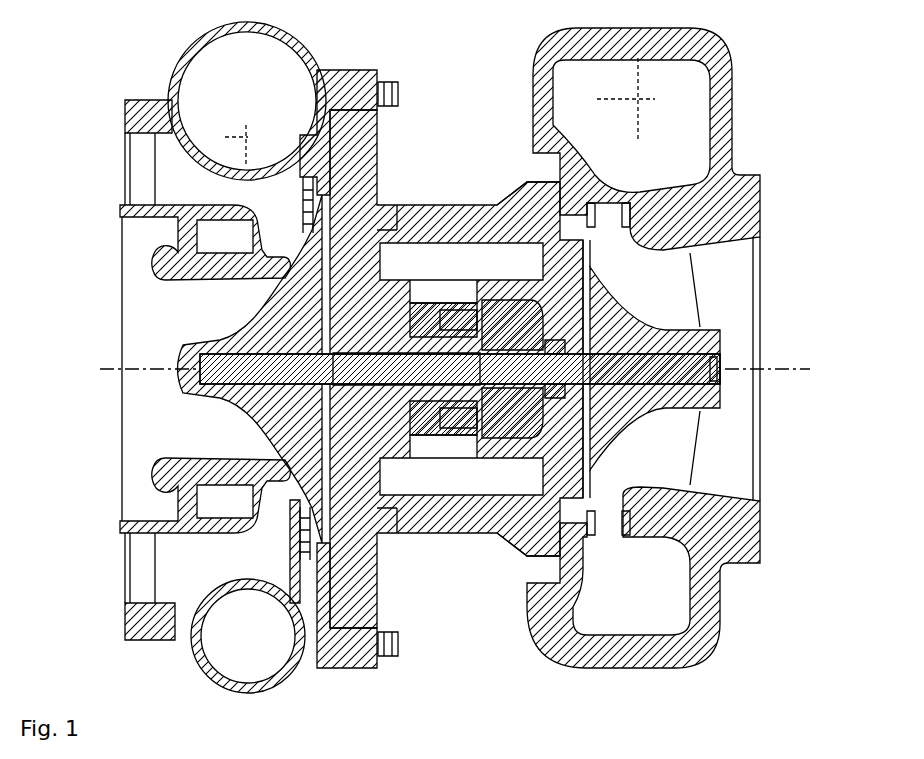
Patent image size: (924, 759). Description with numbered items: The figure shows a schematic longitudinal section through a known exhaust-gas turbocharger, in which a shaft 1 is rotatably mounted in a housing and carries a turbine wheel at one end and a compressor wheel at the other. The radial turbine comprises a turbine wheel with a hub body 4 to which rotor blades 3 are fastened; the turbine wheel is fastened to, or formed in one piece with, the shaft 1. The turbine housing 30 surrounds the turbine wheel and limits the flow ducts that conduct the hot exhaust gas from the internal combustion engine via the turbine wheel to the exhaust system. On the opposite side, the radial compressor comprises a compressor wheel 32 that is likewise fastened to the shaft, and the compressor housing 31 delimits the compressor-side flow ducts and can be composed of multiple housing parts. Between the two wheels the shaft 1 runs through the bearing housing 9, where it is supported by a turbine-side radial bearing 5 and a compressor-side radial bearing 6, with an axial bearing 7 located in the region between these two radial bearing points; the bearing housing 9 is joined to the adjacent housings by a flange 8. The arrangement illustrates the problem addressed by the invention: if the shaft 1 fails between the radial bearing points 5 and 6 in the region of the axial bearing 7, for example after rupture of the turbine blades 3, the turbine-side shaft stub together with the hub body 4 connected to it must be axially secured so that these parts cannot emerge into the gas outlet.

The turbocharger shaft 1 is at (463, 490).
The rotor blades of the turbine wheel 3 is at (660, 450).
The hub body of the turbine wheel 4 is at (700, 347).
The turbine-side radial bearing 5 is at (550, 400).
The compressor-side radial bearing 6 is at (423, 330).
The axial bearing 7 is at (477, 340).
The flange of the bearing housing 8 is at (517, 307).
The bearing housing 9 is at (532, 210).
The turbine housing 30 is at (660, 130).
The compressor housing 31 is at (248, 90).
The compressor wheel 32 is at (277, 340).